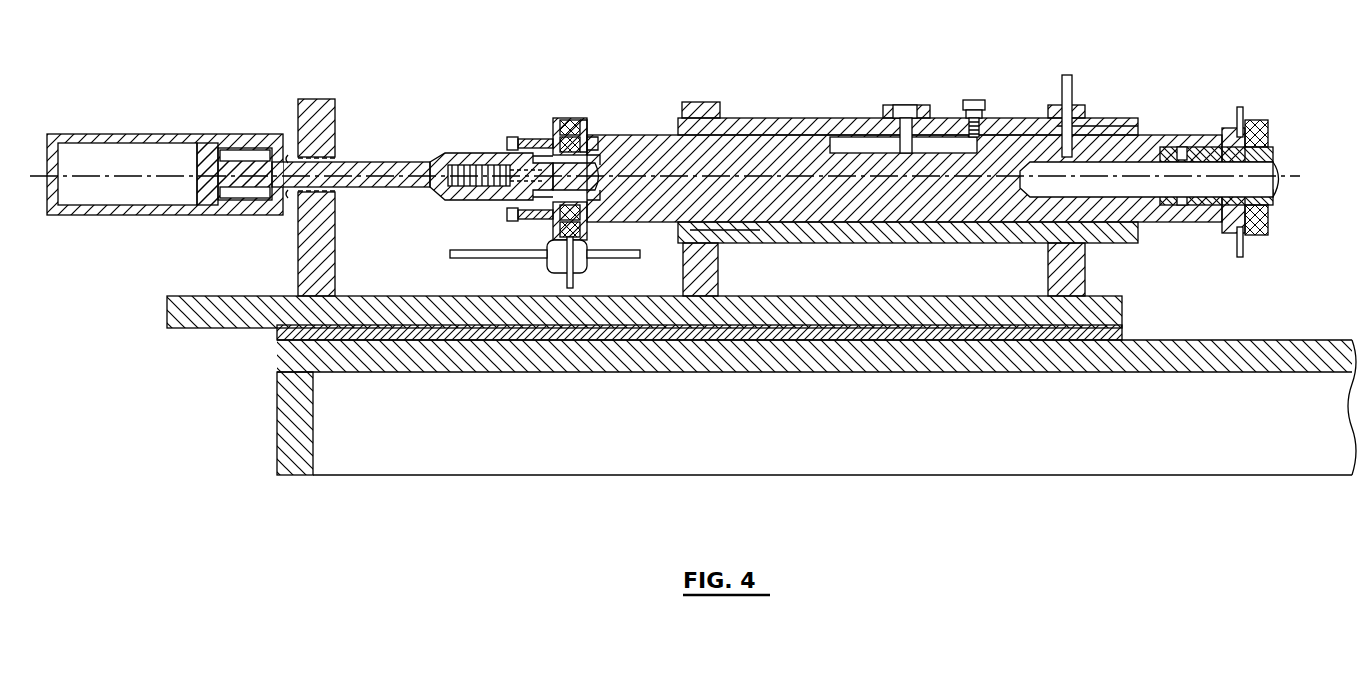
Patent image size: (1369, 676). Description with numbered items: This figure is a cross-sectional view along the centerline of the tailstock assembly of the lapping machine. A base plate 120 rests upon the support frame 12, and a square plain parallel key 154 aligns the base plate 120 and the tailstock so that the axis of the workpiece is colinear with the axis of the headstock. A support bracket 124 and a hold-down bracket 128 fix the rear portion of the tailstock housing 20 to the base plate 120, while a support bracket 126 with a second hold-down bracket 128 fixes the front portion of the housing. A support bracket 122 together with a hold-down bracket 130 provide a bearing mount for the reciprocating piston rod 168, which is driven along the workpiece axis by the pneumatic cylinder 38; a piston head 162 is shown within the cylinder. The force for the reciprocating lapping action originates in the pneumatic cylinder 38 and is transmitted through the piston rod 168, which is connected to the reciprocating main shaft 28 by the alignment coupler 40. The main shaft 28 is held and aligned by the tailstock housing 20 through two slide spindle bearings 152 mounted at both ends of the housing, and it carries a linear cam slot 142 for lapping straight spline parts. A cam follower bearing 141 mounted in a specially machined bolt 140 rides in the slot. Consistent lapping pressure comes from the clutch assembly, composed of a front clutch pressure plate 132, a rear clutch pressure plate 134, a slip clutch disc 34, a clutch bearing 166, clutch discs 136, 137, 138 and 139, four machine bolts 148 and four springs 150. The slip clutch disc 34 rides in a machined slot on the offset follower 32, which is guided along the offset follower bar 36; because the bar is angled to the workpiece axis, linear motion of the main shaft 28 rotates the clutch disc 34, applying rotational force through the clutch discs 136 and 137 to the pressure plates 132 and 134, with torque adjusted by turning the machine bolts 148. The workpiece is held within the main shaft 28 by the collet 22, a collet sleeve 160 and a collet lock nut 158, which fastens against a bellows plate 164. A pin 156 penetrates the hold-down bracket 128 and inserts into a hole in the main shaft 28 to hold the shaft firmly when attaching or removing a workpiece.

The support frame 12 is at (277, 380).
The tailstock housing 20 is at (892, 245).
The collet 22 is at (1272, 160).
The reciprocating main shaft 28 is at (1158, 136).
The offset follower 32 is at (560, 273).
The slip clutch disc 34 is at (573, 270).
The offset follower bar 36 is at (475, 262).
The pneumatic cylinder 38 is at (87, 133).
The alignment coupler 40 is at (496, 188).
The base plate 120 is at (1100, 296).
The support bracket 122 is at (298, 242).
The support bracket 124 is at (718, 271).
The support bracket 126 is at (1048, 272).
The hold-down bracket 128 is at (1081, 105).
The hold-down bracket 130 is at (302, 99).
The front clutch pressure plate 132 is at (586, 128).
The rear clutch pressure plate 134 is at (557, 118).
The clutch disc 136 is at (579, 120).
The clutch disc 137 is at (566, 118).
The clutch disc 138 is at (612, 142).
The clutch disc 139 is at (533, 162).
The machined bolt 140 is at (879, 105).
The cam follower bearing 141 is at (936, 119).
The linear cam slot 142 is at (868, 120).
The machine bolts 148 is at (510, 222).
The springs 150 is at (548, 220).
The slide spindle bearings 152 is at (683, 227).
The square plain parallel key 154 is at (1123, 331).
The pin 156 is at (1067, 75).
The collet lock nut 158 is at (1268, 128).
The collet sleeve 160 is at (1273, 150).
The piston head 162 is at (196, 178).
The bellows plate 164 is at (1240, 257).
The clutch bearing 166 is at (592, 140).
The piston rod 168 is at (343, 164).